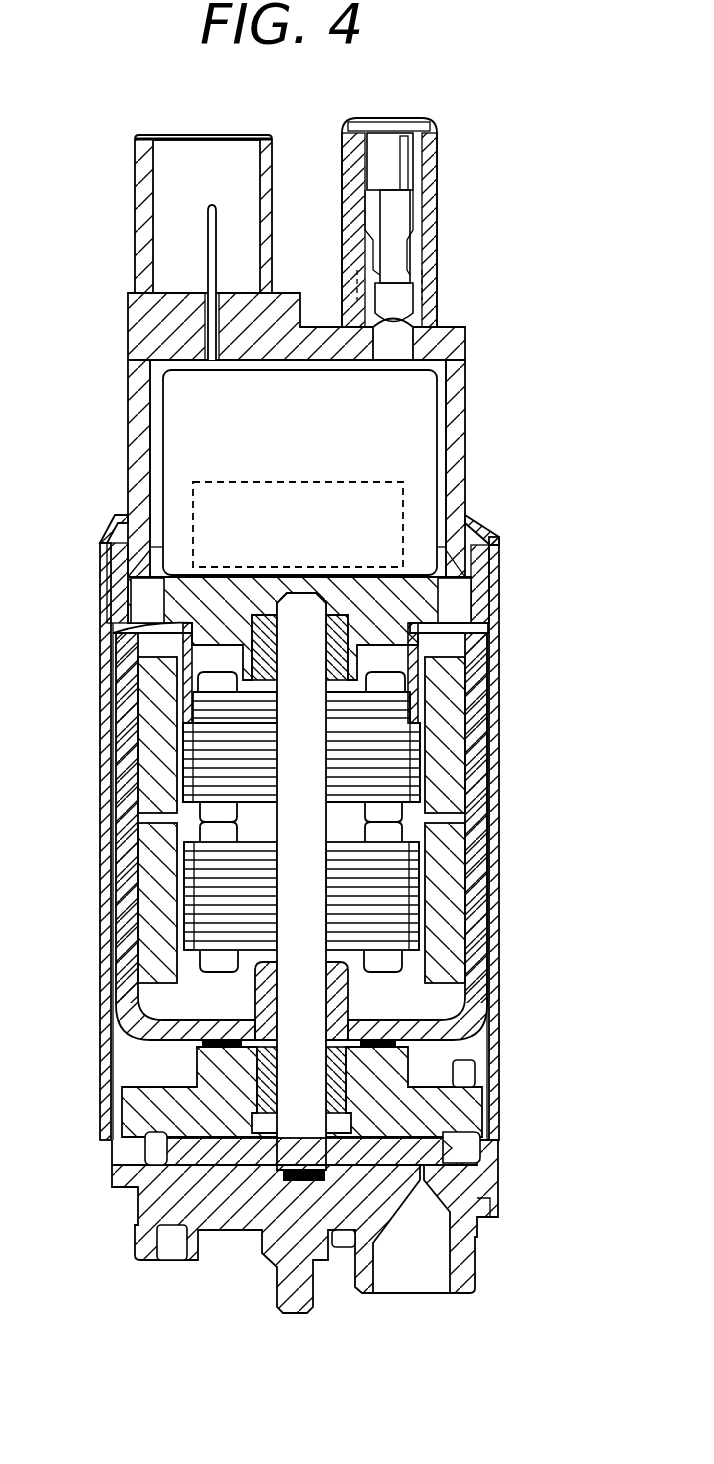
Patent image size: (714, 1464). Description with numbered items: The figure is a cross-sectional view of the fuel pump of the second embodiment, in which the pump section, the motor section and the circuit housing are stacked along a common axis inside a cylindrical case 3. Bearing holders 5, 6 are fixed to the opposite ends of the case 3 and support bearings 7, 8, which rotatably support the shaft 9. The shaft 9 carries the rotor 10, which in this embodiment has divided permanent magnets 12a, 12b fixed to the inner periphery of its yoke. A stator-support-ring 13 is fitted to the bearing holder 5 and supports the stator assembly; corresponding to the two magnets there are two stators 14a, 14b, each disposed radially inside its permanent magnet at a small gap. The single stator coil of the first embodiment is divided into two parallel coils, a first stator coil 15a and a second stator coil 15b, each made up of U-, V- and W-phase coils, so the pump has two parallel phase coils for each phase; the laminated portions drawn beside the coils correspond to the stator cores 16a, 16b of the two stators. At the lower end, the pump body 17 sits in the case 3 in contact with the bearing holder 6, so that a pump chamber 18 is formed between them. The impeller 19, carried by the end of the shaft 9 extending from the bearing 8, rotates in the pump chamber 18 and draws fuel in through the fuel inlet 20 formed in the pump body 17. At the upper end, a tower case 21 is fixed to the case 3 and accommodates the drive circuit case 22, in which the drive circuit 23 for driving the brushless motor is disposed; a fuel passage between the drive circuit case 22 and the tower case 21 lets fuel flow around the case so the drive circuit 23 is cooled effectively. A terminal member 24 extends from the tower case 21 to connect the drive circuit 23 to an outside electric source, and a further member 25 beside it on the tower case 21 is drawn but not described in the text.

The cylindrical case 3 is at (495, 667).
The bearing holder 5 is at (162, 590).
The bearing holder 6 is at (130, 1110).
The bearing 7 is at (355, 620).
The bearing 8 is at (268, 1087).
The shaft 9 is at (260, 985).
The rotor 10 is at (120, 850).
The permanent magnet 12a is at (150, 745).
The permanent magnet 12b is at (150, 945).
The stator-support-ring 13 is at (185, 632).
The stator 14a is at (403, 749).
The stator 14b is at (397, 925).
The first stator coil 15a is at (407, 680).
The second stator coil 15b is at (400, 835).
The winding 16a is at (418, 763).
The winding 16b is at (413, 897).
The pump body 17 is at (155, 1218).
The pump chamber 18 is at (468, 1152).
The impeller 19 is at (428, 1163).
The fuel inlet 20 is at (443, 1270).
The tower case 21 is at (460, 448).
The drive circuit case 22 is at (425, 390).
The drive circuit 23 is at (268, 480).
The terminal member 24 is at (212, 205).
The check valve 25 is at (420, 207).